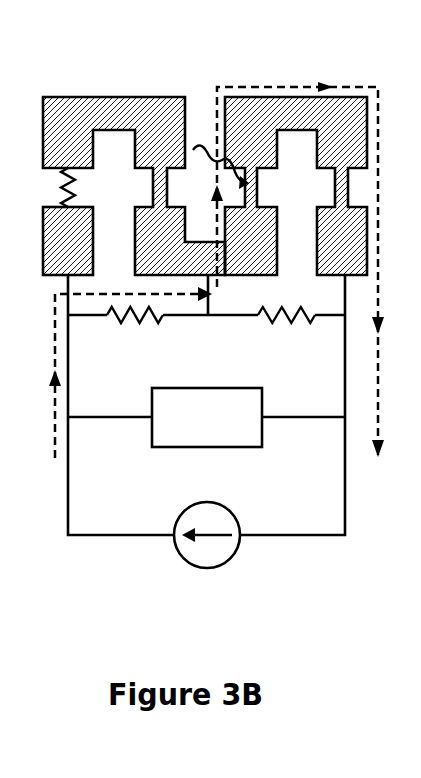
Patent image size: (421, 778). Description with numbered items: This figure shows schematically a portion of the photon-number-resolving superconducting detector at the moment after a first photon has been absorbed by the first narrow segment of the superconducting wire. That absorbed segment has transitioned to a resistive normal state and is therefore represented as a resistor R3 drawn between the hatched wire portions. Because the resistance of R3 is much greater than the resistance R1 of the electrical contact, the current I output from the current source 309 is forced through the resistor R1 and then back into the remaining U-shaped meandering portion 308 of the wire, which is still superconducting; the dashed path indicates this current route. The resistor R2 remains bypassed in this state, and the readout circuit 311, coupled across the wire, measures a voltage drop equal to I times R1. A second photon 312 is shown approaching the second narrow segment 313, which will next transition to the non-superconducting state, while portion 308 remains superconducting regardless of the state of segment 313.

The U-shaped meandering portion 308 is at (278, 105).
The current source 309 is at (222, 563).
The readout circuit 311 is at (207, 417).
The second photon 312 is at (207, 150).
The second narrow segment 313 is at (250, 195).
The resistor R1 is at (135, 331).
The resistor R2 is at (286, 331).
The resistor R3 is at (50, 187).